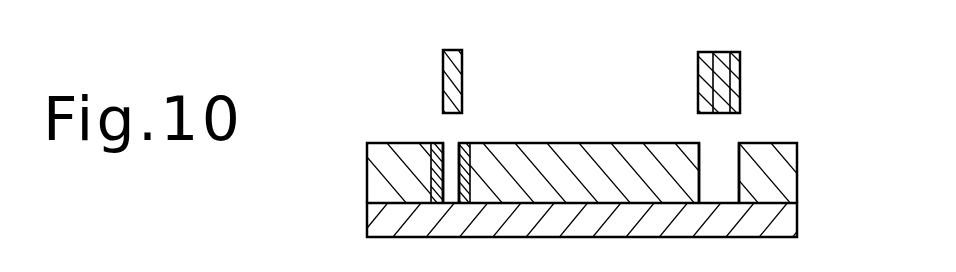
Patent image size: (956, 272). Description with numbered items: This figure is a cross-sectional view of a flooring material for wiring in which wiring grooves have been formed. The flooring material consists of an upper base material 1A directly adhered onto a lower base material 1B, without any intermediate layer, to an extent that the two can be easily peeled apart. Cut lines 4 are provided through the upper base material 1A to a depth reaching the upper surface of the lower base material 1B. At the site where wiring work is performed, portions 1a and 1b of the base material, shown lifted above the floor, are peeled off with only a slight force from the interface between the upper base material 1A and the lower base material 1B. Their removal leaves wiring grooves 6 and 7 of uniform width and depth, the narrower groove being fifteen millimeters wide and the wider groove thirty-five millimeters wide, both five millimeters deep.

The upper base material 1A is at (787, 178).
The lower base material 1B is at (787, 230).
The portion of the base material 1a is at (455, 75).
The portion of the base material 1b is at (721, 52).
The cut lines 4 is at (472, 157).
The wiring groove 6 is at (450, 177).
The wiring groove 7 is at (713, 178).